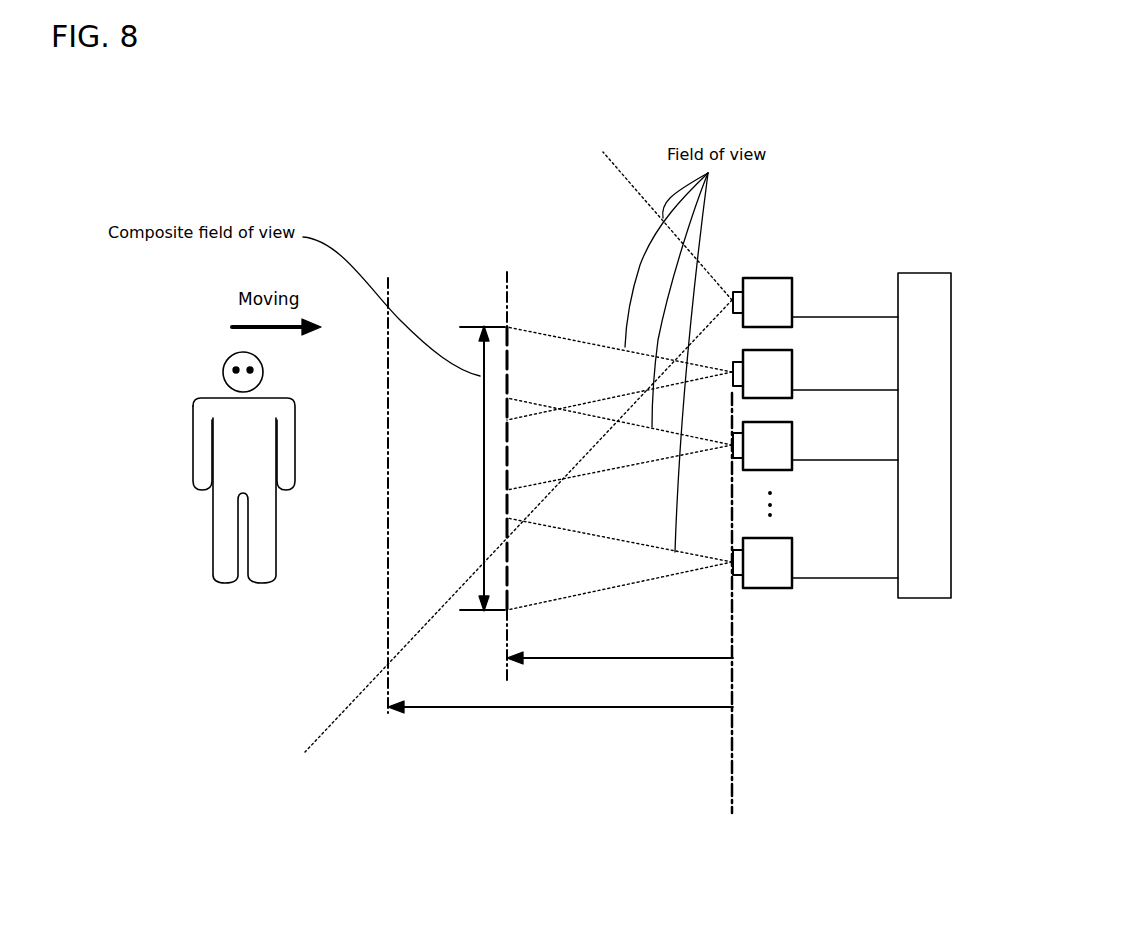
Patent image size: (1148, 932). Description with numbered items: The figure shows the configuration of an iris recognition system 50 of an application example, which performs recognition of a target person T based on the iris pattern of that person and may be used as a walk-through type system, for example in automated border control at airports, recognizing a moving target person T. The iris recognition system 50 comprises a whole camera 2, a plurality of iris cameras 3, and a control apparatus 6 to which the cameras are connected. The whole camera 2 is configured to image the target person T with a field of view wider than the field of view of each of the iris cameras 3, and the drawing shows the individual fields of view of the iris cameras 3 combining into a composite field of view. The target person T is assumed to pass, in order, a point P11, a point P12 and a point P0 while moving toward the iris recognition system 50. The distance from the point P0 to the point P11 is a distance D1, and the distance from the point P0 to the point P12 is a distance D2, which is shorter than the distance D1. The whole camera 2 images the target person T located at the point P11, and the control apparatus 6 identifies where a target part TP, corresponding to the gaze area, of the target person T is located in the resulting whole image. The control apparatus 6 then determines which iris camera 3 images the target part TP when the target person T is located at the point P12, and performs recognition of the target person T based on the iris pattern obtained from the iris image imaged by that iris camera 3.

The whole camera 2 is at (792, 298).
The iris cameras 3 is at (840, 567).
The control apparatus 6 is at (925, 273).
The iris recognition system 50 is at (859, 194).
The target person T is at (223, 585).
The target part TP is at (230, 370).
The point P0 is at (733, 773).
The point P11 is at (388, 713).
The point P12 is at (508, 670).
The distance D1 is at (560, 699).
The distance D2 is at (620, 651).